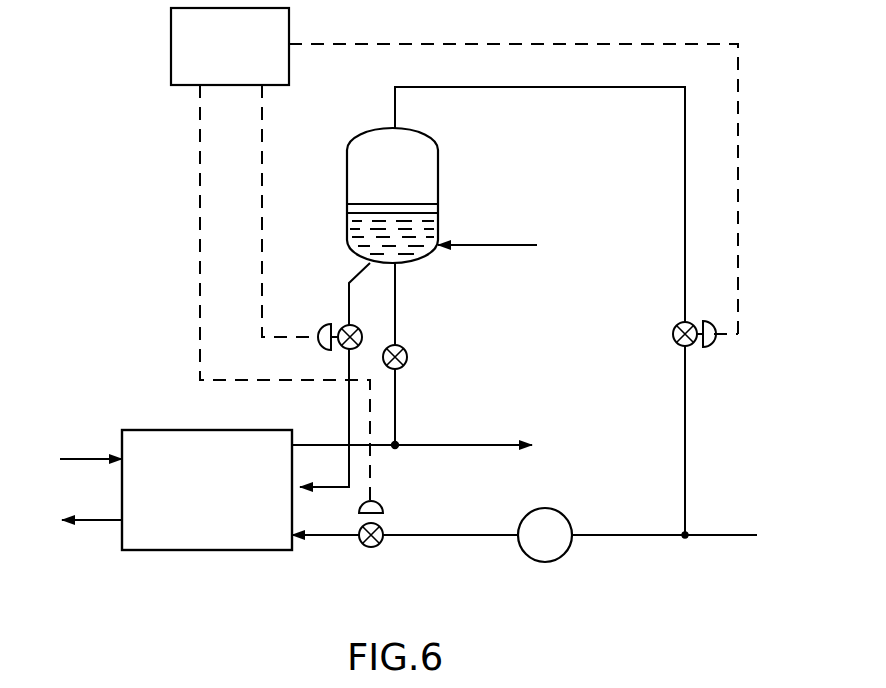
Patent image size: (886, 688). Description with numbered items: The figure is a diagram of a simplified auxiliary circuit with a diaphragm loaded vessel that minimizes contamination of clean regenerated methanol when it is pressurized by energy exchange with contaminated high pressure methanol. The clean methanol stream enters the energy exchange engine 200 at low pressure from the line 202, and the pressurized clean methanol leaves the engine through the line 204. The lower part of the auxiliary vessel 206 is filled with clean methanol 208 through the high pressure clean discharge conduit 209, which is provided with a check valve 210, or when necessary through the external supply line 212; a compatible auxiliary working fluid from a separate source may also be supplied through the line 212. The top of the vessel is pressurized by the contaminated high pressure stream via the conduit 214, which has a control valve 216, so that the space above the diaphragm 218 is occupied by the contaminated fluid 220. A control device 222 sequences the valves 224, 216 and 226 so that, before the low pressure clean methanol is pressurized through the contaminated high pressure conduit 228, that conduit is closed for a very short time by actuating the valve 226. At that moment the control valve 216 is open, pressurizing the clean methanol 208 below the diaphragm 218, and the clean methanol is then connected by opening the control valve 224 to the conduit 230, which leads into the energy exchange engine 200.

The energy exchange engine 200 is at (146, 430).
The line 202 is at (80, 455).
The line 204 is at (478, 450).
The auxiliary vessel 206 is at (438, 189).
The clean methanol 208 is at (365, 225).
The high pressure clean discharge conduit 209 is at (396, 402).
The check valve 210 is at (408, 353).
The external supply line 212 is at (486, 248).
The conduit 214 is at (685, 402).
The control valve 216 is at (673, 328).
The diaphragm 218 is at (397, 204).
The contaminated fluid 220 is at (372, 147).
The control device 222 is at (171, 30).
The control valve 224 is at (340, 330).
The valve 226 is at (370, 548).
The contaminated high pressure conduit 228 is at (460, 537).
The conduit 230 is at (320, 486).